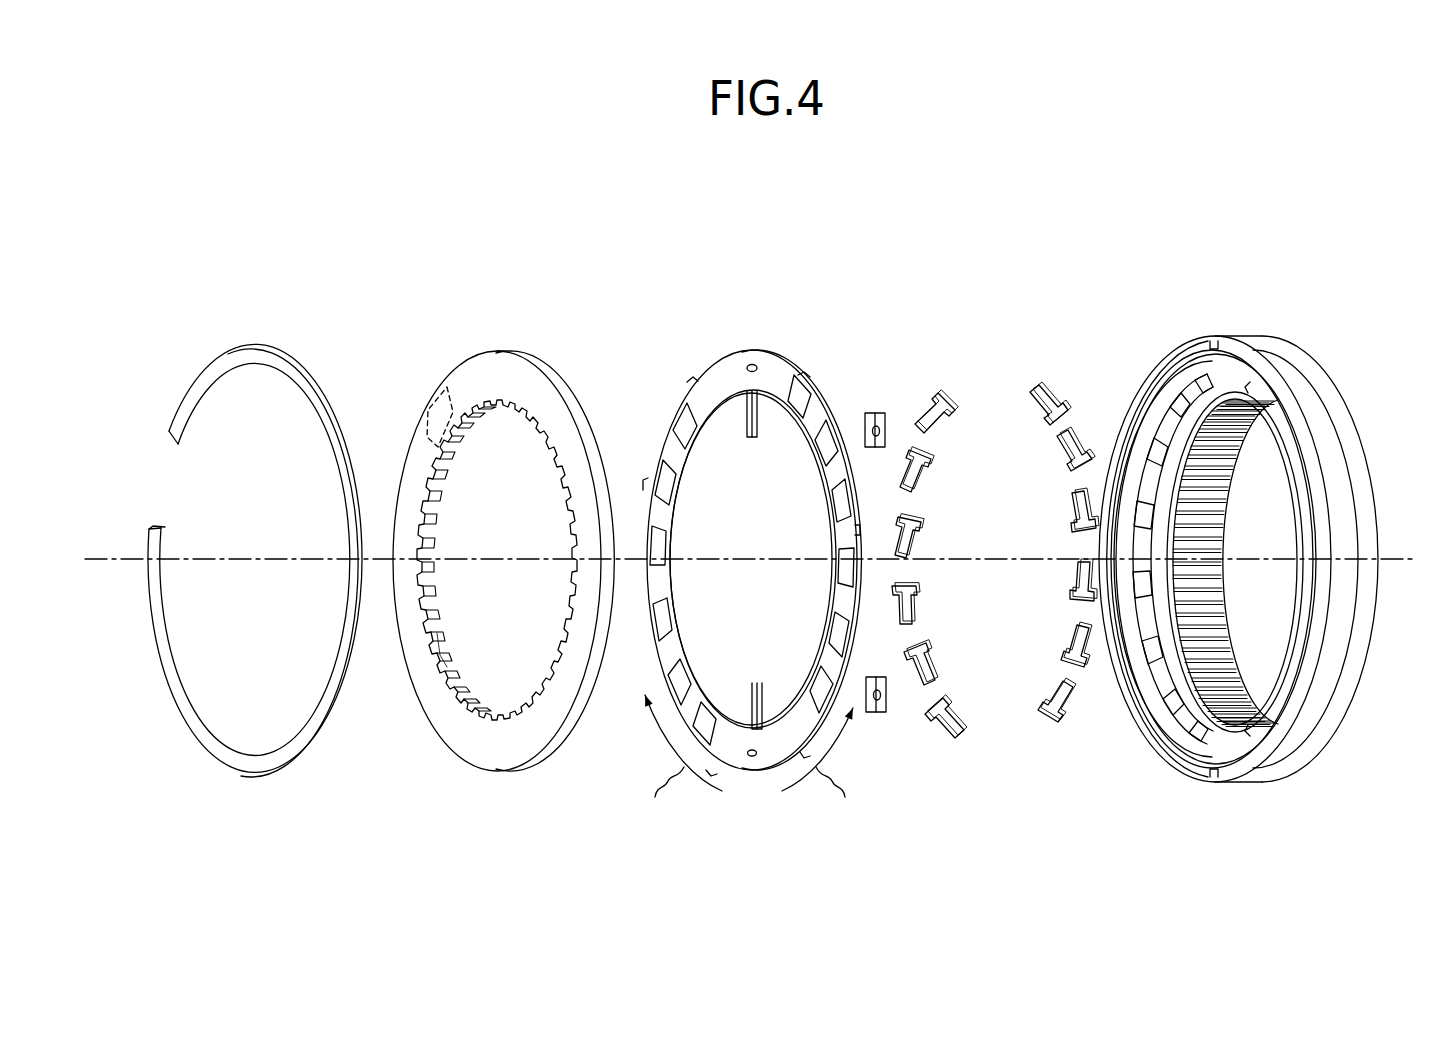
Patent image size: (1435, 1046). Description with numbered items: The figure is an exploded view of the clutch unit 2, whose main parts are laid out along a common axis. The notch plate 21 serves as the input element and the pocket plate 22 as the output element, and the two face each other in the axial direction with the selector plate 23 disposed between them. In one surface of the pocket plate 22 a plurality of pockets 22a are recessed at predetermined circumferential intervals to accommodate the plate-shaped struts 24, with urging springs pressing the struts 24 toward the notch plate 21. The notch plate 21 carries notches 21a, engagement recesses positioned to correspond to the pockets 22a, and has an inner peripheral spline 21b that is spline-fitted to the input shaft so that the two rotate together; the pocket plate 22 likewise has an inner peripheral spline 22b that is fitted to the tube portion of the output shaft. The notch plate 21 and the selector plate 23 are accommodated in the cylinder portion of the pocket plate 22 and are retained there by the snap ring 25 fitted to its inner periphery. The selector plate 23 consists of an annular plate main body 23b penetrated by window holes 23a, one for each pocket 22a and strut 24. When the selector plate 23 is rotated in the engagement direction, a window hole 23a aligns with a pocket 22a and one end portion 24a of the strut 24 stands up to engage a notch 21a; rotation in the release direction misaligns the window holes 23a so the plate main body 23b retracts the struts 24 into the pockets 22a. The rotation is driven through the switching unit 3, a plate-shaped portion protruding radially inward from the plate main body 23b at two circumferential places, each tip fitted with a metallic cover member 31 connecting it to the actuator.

The clutch unit 2 is at (968, 183).
The snap ring 25 is at (246, 338).
The notch plate 21 is at (503, 347).
The notch 21a is at (432, 396).
The inner peripheral spline 21b is at (437, 633).
The selector plate 23 is at (750, 347).
The window hole 23a is at (800, 388).
The plate main body 23b is at (720, 377).
The switching unit 3 is at (744, 418).
The cover member 31 is at (871, 412).
The strut 24 is at (1042, 382).
The one end portion 24a is at (1033, 385).
The pocket plate 22 is at (1235, 521).
The pocket 22a is at (1162, 428).
The inner peripheral spline 22b is at (1229, 657).